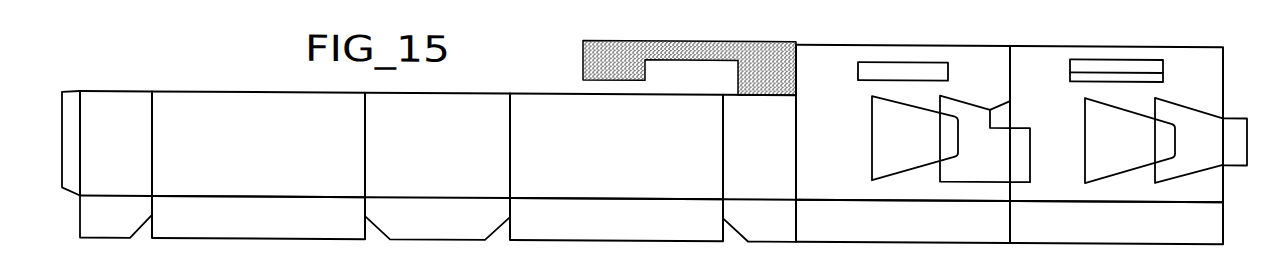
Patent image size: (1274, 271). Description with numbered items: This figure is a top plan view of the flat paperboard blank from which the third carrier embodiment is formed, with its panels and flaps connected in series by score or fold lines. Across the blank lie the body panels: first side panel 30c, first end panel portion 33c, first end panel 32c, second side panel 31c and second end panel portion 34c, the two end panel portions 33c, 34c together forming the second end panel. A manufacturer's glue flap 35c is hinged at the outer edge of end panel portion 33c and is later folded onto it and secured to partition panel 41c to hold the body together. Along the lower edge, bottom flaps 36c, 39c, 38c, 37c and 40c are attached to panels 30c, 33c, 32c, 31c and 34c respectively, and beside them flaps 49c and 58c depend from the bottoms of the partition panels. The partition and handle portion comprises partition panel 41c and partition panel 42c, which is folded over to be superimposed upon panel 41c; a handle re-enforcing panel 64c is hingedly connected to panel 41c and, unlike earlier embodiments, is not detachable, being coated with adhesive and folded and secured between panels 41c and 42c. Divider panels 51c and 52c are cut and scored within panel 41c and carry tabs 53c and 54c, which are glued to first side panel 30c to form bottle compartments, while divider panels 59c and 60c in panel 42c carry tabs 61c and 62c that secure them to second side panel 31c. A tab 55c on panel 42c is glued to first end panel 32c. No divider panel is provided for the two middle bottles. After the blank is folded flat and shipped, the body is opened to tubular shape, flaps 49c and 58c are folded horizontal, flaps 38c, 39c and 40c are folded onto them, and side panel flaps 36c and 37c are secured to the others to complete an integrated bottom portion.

The first side panel 30c is at (268, 152).
The second side panel 31c is at (628, 153).
The first end panel 32c is at (443, 152).
The first end panel portion 33c is at (131, 129).
The second end panel portion 34c is at (778, 152).
The glue flap 35c is at (68, 91).
The bottom flap 36c is at (266, 231).
The bottom flap 37c is at (625, 233).
The bottom flap 38c is at (446, 232).
The bottom flap 39c is at (121, 230).
The bottom flap 40c is at (780, 232).
The partition panel 41c is at (850, 152).
The partition panel 42c is at (1058, 89).
The flap 49c is at (918, 232).
The divider panel 51c is at (920, 148).
The divider panel 52c is at (991, 174).
The tab 53c is at (948, 121).
The tab 54c is at (1020, 158).
The tab 55c is at (1000, 109).
The flap 58c is at (1126, 231).
The divider panel 59c is at (1133, 148).
The divider panel 60c is at (1215, 148).
The tab 61c is at (1167, 121).
The tab 62c is at (1237, 120).
The handle re-enforcing panel 64c is at (583, 58).